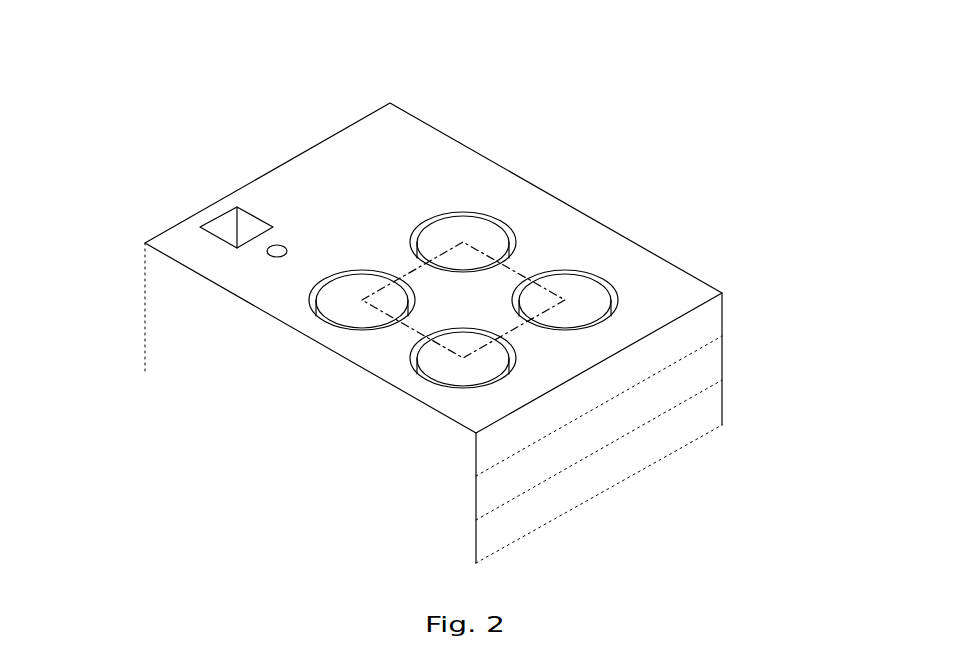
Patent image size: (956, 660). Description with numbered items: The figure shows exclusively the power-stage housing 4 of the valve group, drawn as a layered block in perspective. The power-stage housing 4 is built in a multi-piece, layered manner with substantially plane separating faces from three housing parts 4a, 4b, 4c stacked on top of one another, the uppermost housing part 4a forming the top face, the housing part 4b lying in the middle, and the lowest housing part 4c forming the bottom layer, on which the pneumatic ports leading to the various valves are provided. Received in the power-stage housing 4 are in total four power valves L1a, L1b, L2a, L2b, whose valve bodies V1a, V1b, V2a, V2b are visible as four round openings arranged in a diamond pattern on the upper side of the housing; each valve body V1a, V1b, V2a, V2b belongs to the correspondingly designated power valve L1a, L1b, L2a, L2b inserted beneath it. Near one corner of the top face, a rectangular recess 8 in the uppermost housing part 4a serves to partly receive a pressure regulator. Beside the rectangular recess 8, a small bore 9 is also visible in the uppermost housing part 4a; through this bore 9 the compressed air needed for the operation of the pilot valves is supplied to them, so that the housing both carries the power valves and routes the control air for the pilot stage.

The power-stage housing 4 is at (127, 303).
The uppermost housing part 4a is at (705, 323).
The housing part 4b is at (705, 368).
The lowest housing part 4c is at (705, 415).
The rectangular recess 8 is at (227, 234).
The bore 9 is at (282, 247).
The valve body V1a is at (443, 366).
The valve body V1b is at (448, 233).
The valve body V2a is at (553, 287).
The valve body V2b is at (375, 283).
The power valve L1a is at (477, 364).
The power valve L1b is at (478, 240).
The power valve L2a is at (578, 298).
The power valve L2b is at (348, 298).